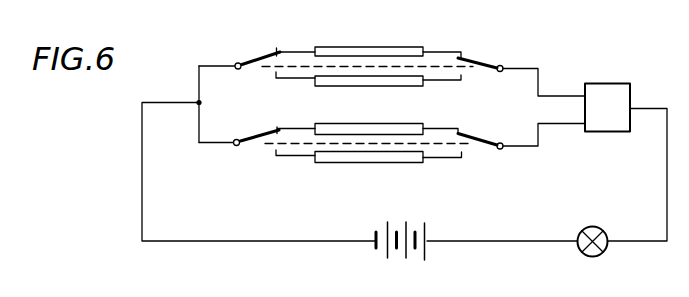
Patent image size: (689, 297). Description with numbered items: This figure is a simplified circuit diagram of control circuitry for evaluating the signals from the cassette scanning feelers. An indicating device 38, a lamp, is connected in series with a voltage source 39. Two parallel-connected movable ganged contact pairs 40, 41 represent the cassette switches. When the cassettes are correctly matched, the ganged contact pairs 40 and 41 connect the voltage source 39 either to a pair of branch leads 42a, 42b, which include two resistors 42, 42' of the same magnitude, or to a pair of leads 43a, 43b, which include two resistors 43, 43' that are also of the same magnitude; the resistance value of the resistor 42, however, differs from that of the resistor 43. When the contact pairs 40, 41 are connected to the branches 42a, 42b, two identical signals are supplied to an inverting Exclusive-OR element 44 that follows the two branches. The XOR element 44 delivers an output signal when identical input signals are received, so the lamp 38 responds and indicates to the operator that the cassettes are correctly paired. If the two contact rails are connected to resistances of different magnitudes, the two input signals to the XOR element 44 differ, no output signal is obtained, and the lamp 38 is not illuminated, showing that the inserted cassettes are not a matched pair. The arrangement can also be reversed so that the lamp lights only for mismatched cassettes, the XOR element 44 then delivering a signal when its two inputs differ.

The indicating device 38 is at (595, 252).
The voltage source 39 is at (380, 253).
The movable ganged contact pair 40 is at (252, 137).
The movable ganged contact pair 41 is at (256, 58).
The resistor 42 is at (388, 36).
The resistor 42' is at (386, 114).
The branch lead 42a is at (294, 49).
The branch lead 42b is at (293, 124).
The resistor 43 is at (349, 93).
The resistor 43' is at (349, 171).
The lead 43a is at (457, 81).
The lead 43b is at (455, 159).
The inverting Exclusive-OR element 44 is at (618, 120).